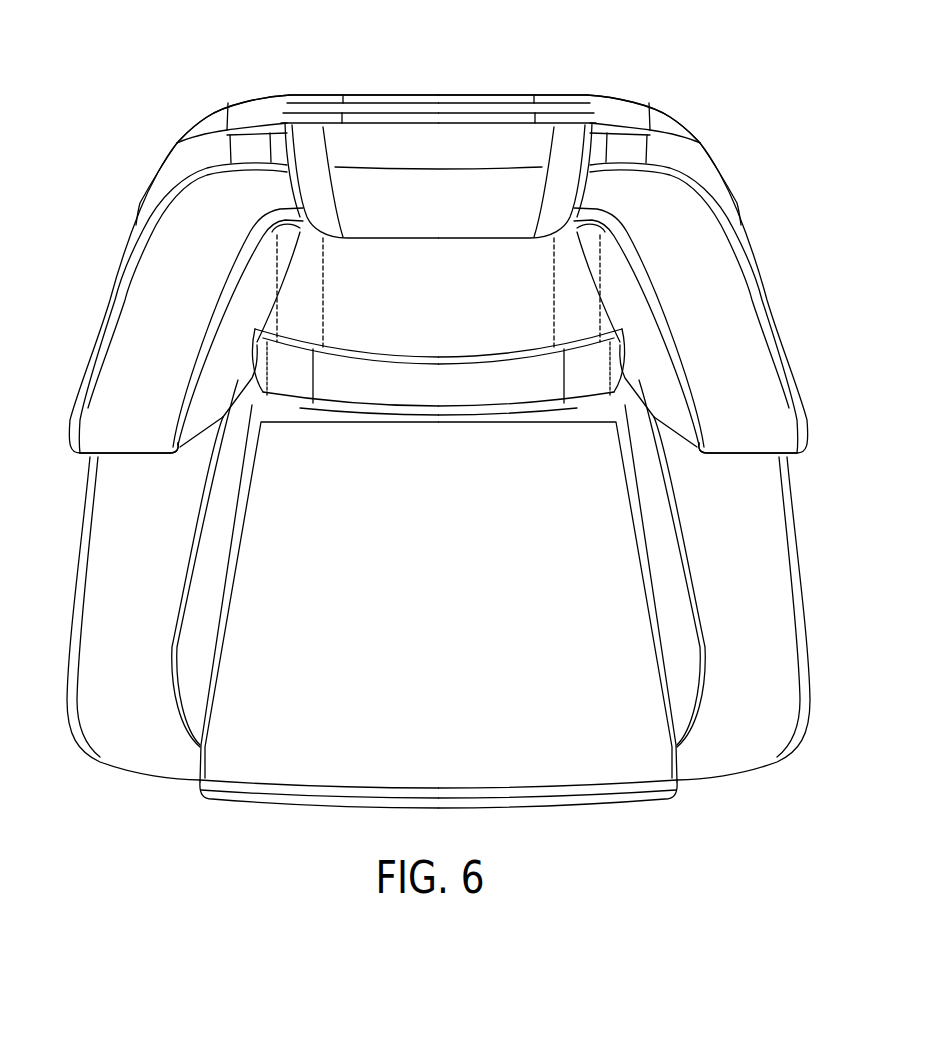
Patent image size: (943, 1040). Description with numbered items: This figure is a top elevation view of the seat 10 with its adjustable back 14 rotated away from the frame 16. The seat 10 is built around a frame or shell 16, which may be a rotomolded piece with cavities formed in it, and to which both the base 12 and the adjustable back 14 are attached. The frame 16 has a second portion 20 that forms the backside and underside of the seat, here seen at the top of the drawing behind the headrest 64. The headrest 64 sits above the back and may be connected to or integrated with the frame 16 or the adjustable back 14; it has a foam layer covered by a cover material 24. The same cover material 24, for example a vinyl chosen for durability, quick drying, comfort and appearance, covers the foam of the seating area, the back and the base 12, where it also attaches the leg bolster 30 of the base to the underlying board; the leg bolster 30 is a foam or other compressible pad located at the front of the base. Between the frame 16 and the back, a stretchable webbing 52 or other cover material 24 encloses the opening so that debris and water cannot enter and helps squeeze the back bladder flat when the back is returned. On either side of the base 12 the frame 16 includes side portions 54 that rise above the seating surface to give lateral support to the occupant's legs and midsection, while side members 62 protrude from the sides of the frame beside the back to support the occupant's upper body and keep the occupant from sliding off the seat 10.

The seat 10 is at (133, 71).
The base 12 is at (722, 800).
The adjustable back 14 is at (726, 85).
The frame 16 is at (252, 113).
The second portion 20 is at (375, 62).
The cover material 24 is at (146, 343).
The leg bolster 30 is at (548, 772).
The webbing 52 is at (577, 293).
The side portions 54 is at (98, 604).
The side members 62 is at (93, 436).
The headrest 64 is at (462, 148).